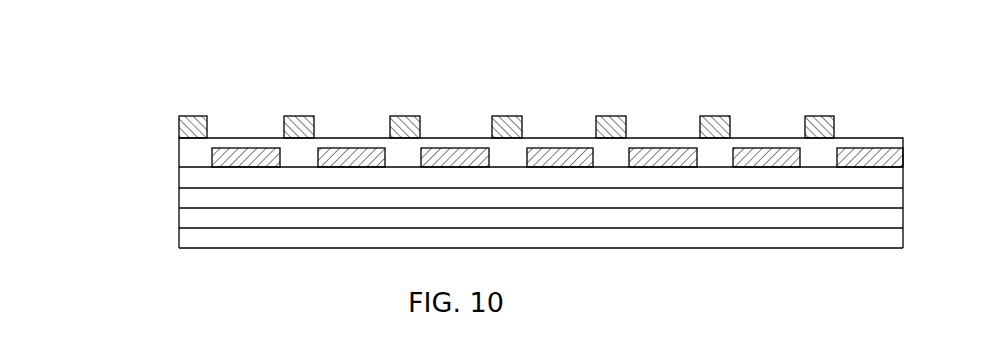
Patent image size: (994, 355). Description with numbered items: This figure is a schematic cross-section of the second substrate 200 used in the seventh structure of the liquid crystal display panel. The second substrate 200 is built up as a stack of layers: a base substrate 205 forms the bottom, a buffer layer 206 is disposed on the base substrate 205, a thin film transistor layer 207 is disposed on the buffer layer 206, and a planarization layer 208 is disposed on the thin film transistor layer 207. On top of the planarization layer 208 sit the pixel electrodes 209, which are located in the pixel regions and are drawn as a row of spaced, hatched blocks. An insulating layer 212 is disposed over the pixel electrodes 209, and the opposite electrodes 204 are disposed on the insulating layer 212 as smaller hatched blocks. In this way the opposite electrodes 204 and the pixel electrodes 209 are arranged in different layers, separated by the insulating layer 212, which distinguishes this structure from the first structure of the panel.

The second substrate 200 is at (408, 48).
The opposite electrodes 204 is at (403, 115).
The base substrate 205 is at (185, 239).
The buffer layer 206 is at (185, 220).
The thin film transistor layer 207 is at (185, 200).
The planarization layer 208 is at (185, 178).
The pixel electrodes 209 is at (245, 158).
The insulating layer 212 is at (325, 145).